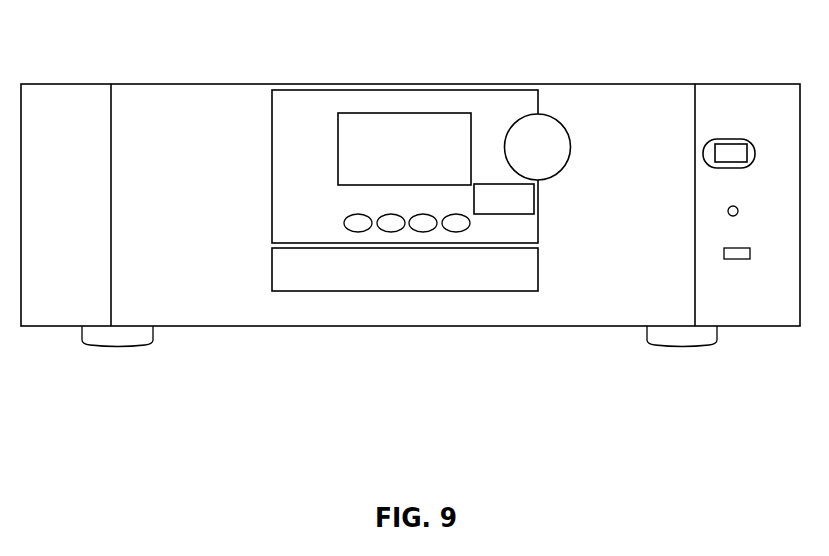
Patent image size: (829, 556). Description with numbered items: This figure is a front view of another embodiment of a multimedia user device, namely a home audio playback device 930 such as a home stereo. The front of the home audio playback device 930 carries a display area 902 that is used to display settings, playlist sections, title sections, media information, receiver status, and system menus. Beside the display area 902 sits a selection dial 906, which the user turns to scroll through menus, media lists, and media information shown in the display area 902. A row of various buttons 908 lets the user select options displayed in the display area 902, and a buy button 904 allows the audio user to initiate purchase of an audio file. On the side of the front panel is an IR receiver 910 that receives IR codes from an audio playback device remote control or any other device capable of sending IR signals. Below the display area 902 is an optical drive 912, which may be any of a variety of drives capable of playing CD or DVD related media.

The home audio playback device 930 is at (630, 69).
The display area 902 is at (404, 149).
The selection dial 906 is at (538, 147).
The buy button 904 is at (538, 195).
The buttons 908 is at (345, 223).
The IR receiver 910 is at (780, 153).
The optical drive 912 is at (405, 269).